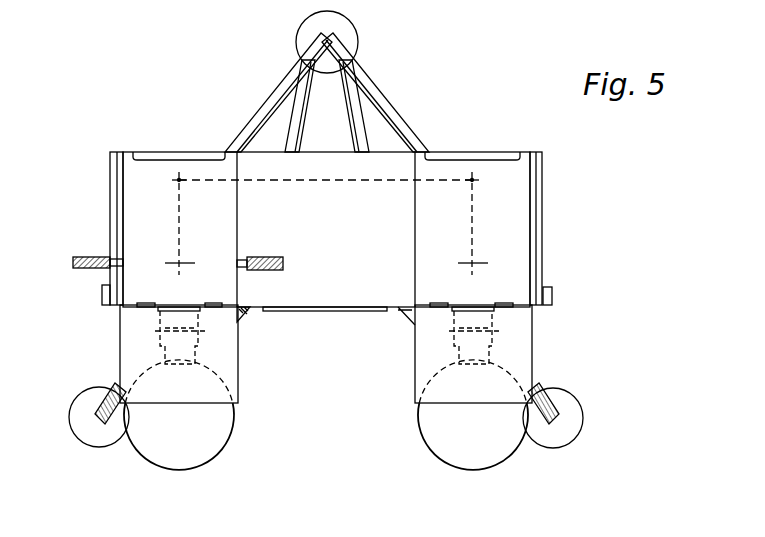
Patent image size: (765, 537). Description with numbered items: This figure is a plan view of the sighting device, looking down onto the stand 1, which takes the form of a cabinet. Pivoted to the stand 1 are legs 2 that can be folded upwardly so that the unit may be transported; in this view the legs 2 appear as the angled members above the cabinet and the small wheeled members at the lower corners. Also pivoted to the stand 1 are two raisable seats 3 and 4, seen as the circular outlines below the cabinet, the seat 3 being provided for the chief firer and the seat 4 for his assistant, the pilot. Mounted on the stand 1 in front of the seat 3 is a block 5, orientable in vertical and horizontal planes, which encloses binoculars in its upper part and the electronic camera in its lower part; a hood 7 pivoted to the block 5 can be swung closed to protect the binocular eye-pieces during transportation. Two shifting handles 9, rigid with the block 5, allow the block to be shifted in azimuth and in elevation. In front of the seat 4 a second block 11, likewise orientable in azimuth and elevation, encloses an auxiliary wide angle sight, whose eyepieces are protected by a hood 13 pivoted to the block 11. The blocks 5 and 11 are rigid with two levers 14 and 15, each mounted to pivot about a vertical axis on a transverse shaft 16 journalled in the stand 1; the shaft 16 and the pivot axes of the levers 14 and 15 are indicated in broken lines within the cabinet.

The stand 1 is at (334, 307).
The legs 2 is at (275, 100).
The seat 3 is at (222, 428).
The seat 4 is at (430, 422).
The block 5 is at (128, 195).
The hood 7 is at (130, 330).
The shifting handles 9 is at (82, 270).
The block 11 is at (518, 263).
The hood 13 is at (522, 352).
The lever 14 is at (179, 218).
The lever 15 is at (472, 228).
The transverse shaft 16 is at (383, 180).